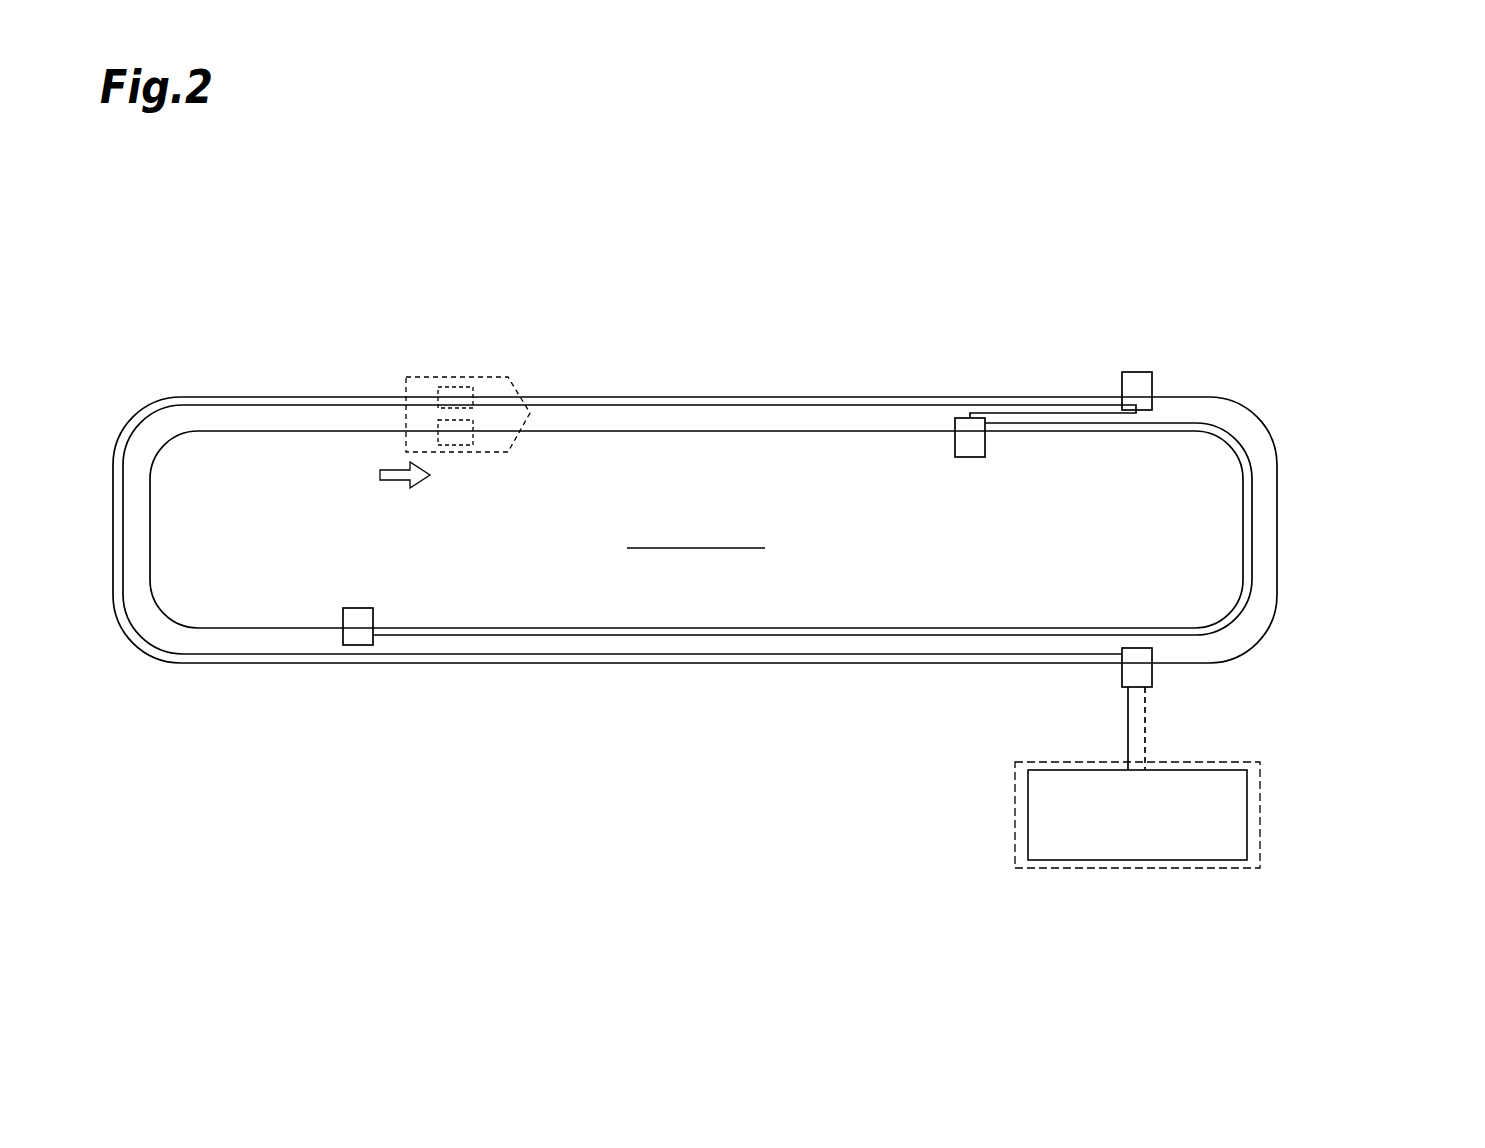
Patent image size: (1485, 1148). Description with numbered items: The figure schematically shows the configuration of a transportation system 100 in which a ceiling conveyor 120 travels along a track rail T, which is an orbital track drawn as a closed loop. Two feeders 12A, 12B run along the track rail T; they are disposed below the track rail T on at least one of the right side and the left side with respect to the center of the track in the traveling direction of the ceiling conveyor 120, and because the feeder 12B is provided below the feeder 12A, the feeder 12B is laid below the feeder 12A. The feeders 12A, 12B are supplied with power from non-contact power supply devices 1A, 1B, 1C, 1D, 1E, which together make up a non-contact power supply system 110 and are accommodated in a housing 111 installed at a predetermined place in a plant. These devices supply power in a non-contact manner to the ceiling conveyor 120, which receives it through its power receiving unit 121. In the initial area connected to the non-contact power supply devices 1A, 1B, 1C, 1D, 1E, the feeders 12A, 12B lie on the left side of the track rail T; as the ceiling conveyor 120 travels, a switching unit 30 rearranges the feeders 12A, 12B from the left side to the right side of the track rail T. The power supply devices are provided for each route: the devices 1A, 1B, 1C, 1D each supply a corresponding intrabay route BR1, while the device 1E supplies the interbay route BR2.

The article transport system 100 is at (1322, 320).
The track rail T is at (1232, 404).
The feeder 12A is at (587, 397).
The feeder 12B is at (563, 663).
The switching unit 30 is at (1135, 375).
The ceiling conveyor 120 is at (418, 377).
The power receiving unit 121 is at (450, 387).
The intrabay route BR1 is at (696, 532).
The interbay route BR2 is at (696, 532).
The non-contact power supply device 1A is at (1242, 835).
The non-contact power supply device 1B is at (1242, 835).
The non-contact power supply device 1C is at (1242, 835).
The non-contact power supply device 1D is at (1242, 835).
The non-contact power supply device 1E is at (1215, 762).
The non-contact power supply system 110 is at (1268, 842).
The housing 111 is at (1177, 868).